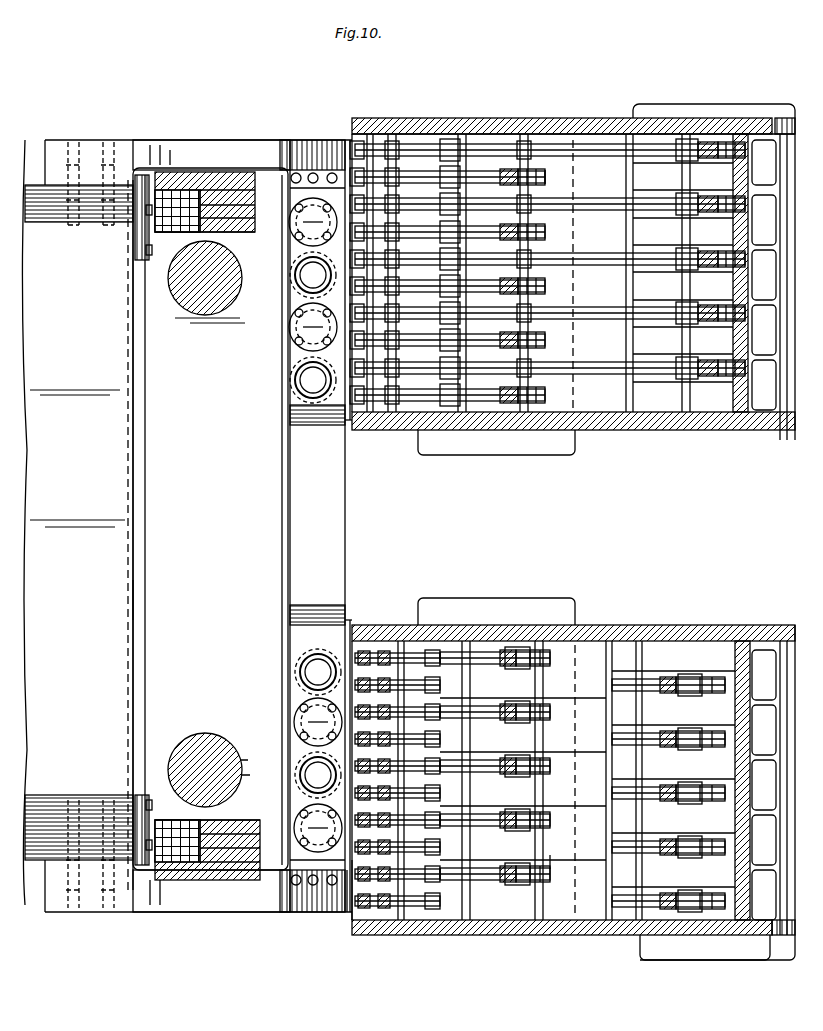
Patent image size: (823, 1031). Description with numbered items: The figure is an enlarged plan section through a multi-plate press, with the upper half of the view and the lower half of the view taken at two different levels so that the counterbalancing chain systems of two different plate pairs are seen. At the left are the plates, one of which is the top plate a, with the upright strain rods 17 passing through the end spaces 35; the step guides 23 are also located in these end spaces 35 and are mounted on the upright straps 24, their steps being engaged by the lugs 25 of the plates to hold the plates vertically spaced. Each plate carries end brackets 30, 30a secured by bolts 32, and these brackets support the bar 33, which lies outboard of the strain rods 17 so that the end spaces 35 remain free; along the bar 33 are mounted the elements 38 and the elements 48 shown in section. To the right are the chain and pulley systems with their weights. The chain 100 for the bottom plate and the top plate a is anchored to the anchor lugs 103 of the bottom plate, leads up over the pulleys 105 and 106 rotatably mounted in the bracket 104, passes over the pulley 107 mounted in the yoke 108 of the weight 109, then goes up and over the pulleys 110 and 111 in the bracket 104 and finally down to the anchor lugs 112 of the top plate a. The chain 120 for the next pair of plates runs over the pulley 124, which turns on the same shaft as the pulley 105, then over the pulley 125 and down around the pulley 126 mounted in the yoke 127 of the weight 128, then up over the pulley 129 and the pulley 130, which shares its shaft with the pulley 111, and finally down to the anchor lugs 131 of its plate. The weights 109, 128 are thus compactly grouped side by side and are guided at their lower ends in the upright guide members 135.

The upright strain rods 17 is at (225, 300).
The step guides 23 is at (238, 228).
The upright straps 24 is at (195, 172).
The lugs 25 is at (147, 175).
The end bracket 30 is at (248, 142).
The end bracket 30a is at (190, 912).
The bolts 32 is at (105, 912).
The bar 33 is at (338, 535).
The end spaces 35 is at (210, 519).
The bearing 38 is at (292, 222).
The bearing 48 is at (300, 280).
The chain 100 is at (545, 133).
The anchor lugs 103 is at (400, 920).
The bracket 104 is at (490, 118).
The pulley 105 is at (422, 155).
The pulley 106 is at (622, 915).
The pulley 107 is at (662, 935).
The yoke 108 is at (660, 150).
The weight 109 is at (765, 112).
The pulley 110 is at (708, 145).
The pulley 111 is at (372, 134).
The anchor lugs 112 is at (352, 900).
The chain 120 is at (548, 178).
The pulley 124 is at (448, 160).
The pulley 125 is at (410, 862).
The pulley 126 is at (560, 905).
The yoke 127 is at (528, 905).
The weight 128 is at (600, 855).
The pulley 129 is at (495, 180).
The pulley 130 is at (352, 150).
The anchor lugs 131 is at (350, 890).
The upright guide members 135 is at (500, 435).
The top plate a is at (136, 605).